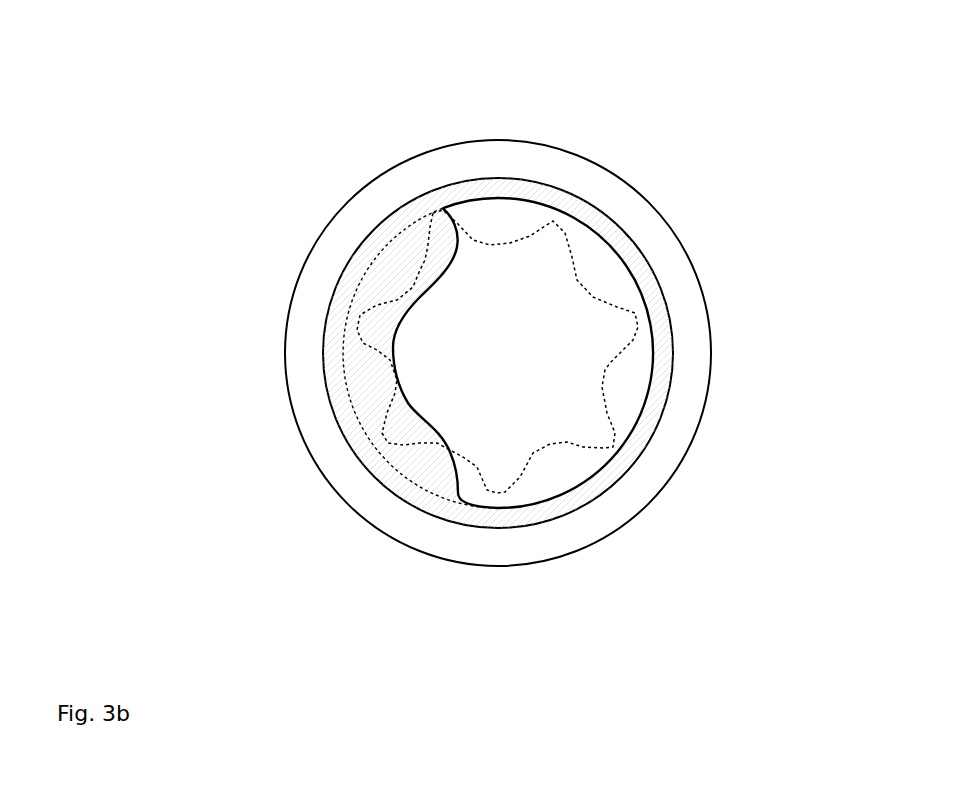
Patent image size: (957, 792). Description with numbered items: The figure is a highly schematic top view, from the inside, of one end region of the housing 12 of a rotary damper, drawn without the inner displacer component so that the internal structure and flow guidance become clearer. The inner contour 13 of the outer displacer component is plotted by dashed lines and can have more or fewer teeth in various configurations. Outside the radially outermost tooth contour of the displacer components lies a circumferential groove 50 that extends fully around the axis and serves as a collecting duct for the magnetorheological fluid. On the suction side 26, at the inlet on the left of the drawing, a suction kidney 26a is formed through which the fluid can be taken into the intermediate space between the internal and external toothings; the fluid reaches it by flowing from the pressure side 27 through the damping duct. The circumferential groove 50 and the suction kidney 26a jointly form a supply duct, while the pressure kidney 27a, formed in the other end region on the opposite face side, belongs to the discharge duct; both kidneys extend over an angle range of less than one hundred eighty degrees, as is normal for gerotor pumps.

The housing 12 is at (447, 168).
The inner contour 13 is at (607, 363).
The circumferential groove 50 is at (545, 198).
The suction side 26 is at (425, 531).
The pressure side 27 is at (566, 532).
The suction kidney 26a is at (413, 245).
The pressure kidney 27a is at (585, 263).